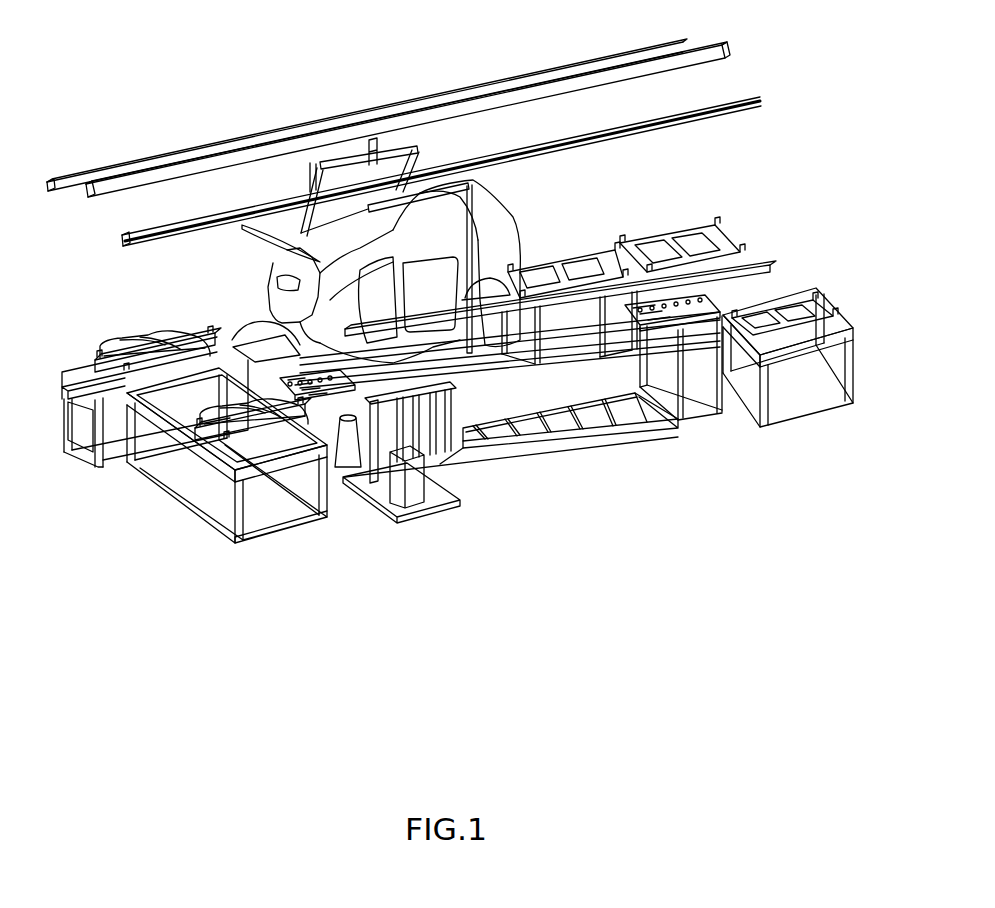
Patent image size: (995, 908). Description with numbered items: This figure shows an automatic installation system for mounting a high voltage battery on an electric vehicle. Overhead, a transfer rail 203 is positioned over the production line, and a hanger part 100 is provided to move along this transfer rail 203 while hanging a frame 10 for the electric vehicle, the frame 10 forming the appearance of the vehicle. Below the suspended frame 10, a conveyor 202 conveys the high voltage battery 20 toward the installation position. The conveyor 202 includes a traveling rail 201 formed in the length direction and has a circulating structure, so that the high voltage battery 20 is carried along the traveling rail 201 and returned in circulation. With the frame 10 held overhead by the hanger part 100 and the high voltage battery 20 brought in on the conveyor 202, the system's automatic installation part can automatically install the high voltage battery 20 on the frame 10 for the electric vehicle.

The frame for the electric vehicle 10 is at (268, 280).
The high voltage battery 20 is at (133, 340).
The hanger part 100 is at (477, 238).
The traveling rail 201 is at (587, 460).
The conveyor 202 is at (675, 233).
The transfer rail 203 is at (476, 92).